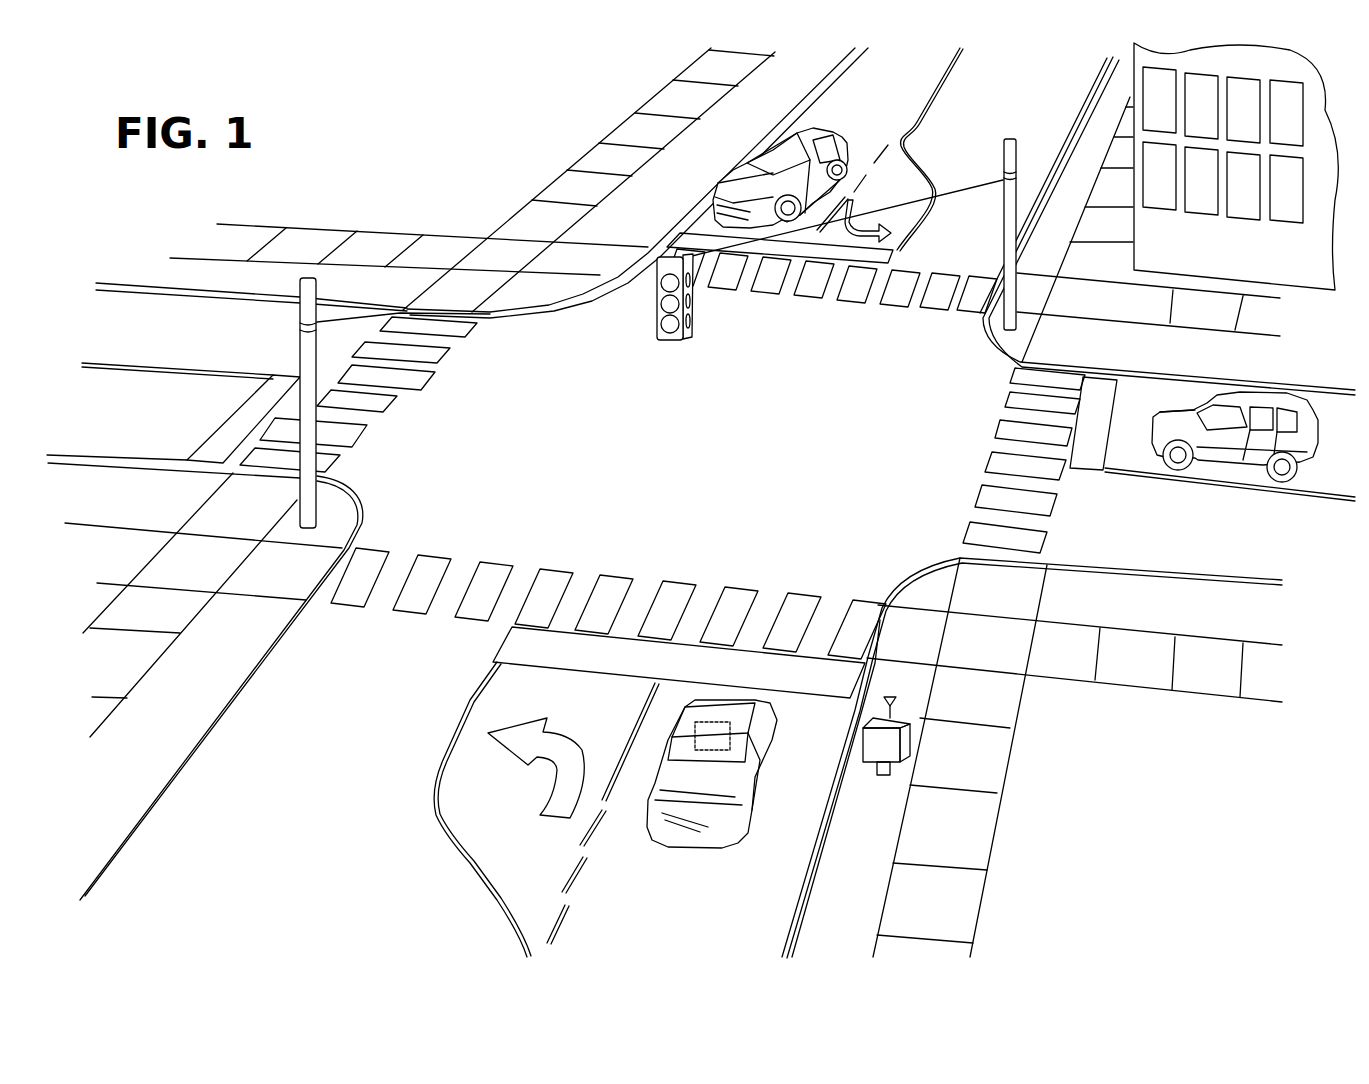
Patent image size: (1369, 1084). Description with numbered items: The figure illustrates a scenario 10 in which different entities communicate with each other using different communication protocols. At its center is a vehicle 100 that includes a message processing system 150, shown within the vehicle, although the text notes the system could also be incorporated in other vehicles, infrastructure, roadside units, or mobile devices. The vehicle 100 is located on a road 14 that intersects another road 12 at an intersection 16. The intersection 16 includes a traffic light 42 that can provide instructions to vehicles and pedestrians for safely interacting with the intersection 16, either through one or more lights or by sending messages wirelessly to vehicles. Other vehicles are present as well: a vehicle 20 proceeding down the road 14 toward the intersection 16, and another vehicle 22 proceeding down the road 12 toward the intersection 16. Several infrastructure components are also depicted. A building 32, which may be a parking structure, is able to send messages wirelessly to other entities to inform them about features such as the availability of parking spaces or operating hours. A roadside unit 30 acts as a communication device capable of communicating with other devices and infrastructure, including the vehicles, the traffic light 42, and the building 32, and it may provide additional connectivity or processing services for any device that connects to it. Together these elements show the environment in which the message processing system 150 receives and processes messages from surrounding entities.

The scenario 10 is at (464, 132).
The road 12 is at (163, 421).
The road 14 is at (314, 813).
The intersection 16 is at (748, 428).
The vehicle 20 is at (820, 132).
The vehicle 22 is at (1320, 410).
The roadside unit 30 is at (910, 740).
The building 32 is at (1133, 155).
The traffic light 42 is at (657, 318).
The vehicle 100 is at (695, 823).
The message processing system 150 is at (732, 733).